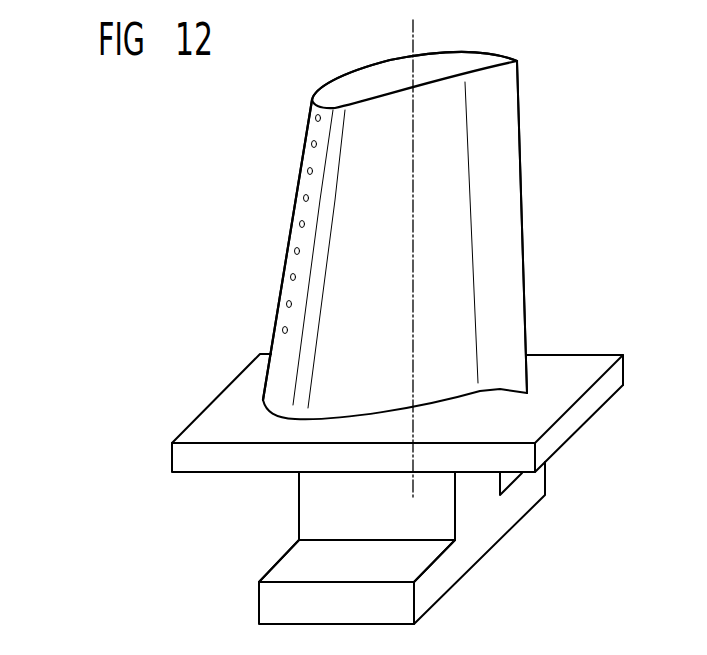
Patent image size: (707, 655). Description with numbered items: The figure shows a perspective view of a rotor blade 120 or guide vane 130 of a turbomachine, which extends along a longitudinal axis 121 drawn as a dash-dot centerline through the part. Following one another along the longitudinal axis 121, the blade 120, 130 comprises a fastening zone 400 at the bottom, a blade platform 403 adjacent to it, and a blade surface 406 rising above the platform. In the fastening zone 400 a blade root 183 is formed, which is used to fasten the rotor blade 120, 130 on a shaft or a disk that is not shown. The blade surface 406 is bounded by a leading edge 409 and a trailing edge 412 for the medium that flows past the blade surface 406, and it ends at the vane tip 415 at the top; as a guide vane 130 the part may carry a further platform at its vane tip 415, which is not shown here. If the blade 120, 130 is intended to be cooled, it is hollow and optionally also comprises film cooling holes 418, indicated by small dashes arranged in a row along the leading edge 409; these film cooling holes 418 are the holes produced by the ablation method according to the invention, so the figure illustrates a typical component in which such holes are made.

The rotor blade 120 is at (350, 328).
The guide vane 130 is at (203, 250).
The longitudinal axis 121 is at (410, 43).
The blade root 183 is at (283, 568).
The fastening zone 400 is at (476, 552).
The blade platform 403 is at (590, 405).
The blade surface 406 is at (276, 379).
The leading edge 409 is at (300, 172).
The trailing edge 412 is at (552, 190).
The vane tip 415 is at (327, 92).
The film cooling holes 418 is at (315, 118).